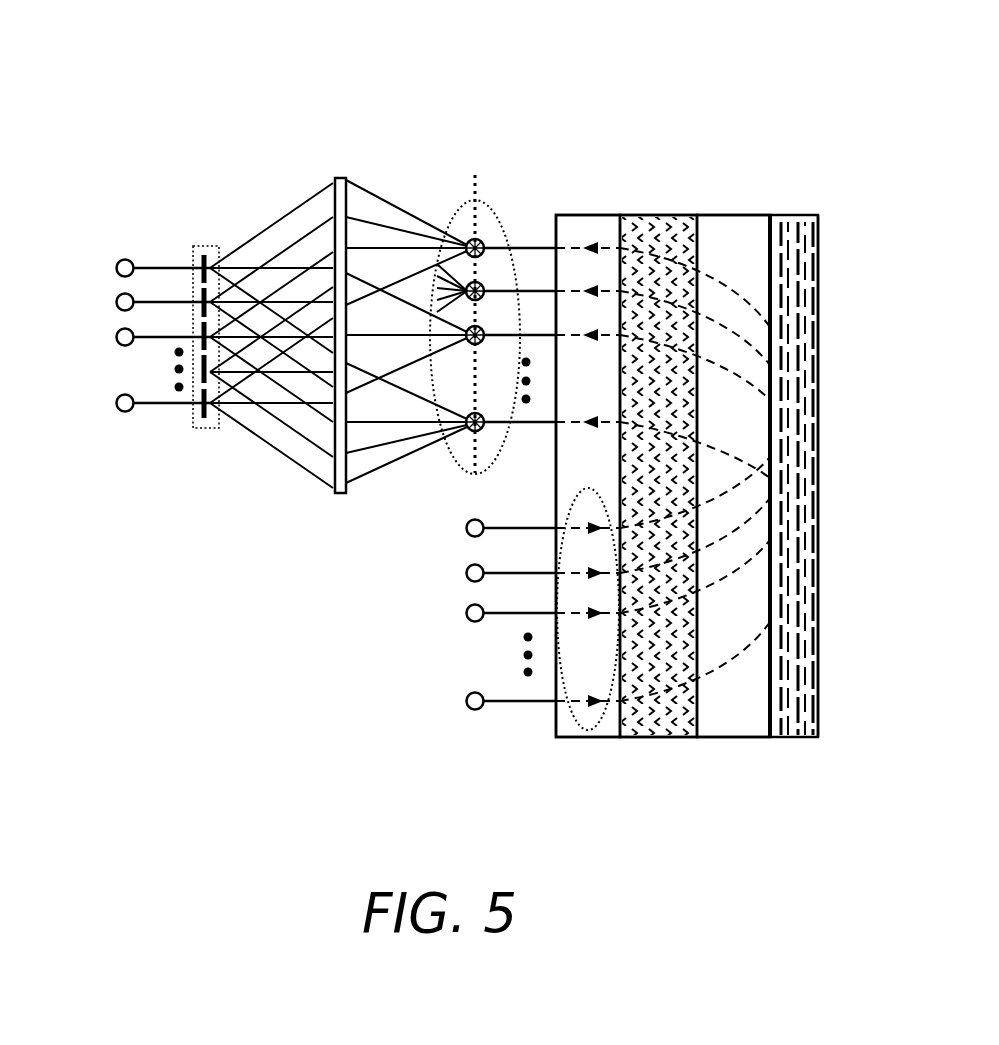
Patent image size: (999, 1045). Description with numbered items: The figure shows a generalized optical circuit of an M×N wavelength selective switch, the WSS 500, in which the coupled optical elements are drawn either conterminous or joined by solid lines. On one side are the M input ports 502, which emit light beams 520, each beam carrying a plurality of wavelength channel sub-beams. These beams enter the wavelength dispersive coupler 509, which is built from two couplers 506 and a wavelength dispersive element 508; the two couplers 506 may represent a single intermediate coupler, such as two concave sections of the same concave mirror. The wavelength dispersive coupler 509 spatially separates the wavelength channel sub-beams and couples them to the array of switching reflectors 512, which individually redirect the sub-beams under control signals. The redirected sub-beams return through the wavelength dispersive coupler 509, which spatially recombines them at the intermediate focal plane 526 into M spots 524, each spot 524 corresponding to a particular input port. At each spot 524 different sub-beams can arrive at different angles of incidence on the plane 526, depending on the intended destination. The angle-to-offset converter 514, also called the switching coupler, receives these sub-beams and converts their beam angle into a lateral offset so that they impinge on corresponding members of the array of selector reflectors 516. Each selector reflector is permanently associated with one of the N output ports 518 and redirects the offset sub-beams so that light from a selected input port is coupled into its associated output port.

The M×N WSS 500 is at (737, 73).
The input ports 502 is at (460, 508).
The couplers 506 is at (580, 215).
The wavelength dispersive element 508 is at (658, 215).
The wavelength dispersive coupler 509 is at (768, 748).
The array of switching reflectors 512 is at (818, 222).
The angle-to-offset converter 514 is at (340, 178).
The array of selector reflectors 516 is at (197, 430).
The output ports 518 is at (103, 247).
The light beams 520 is at (570, 708).
The spots 524 is at (455, 470).
The intermediate focal plane 526 is at (475, 183).